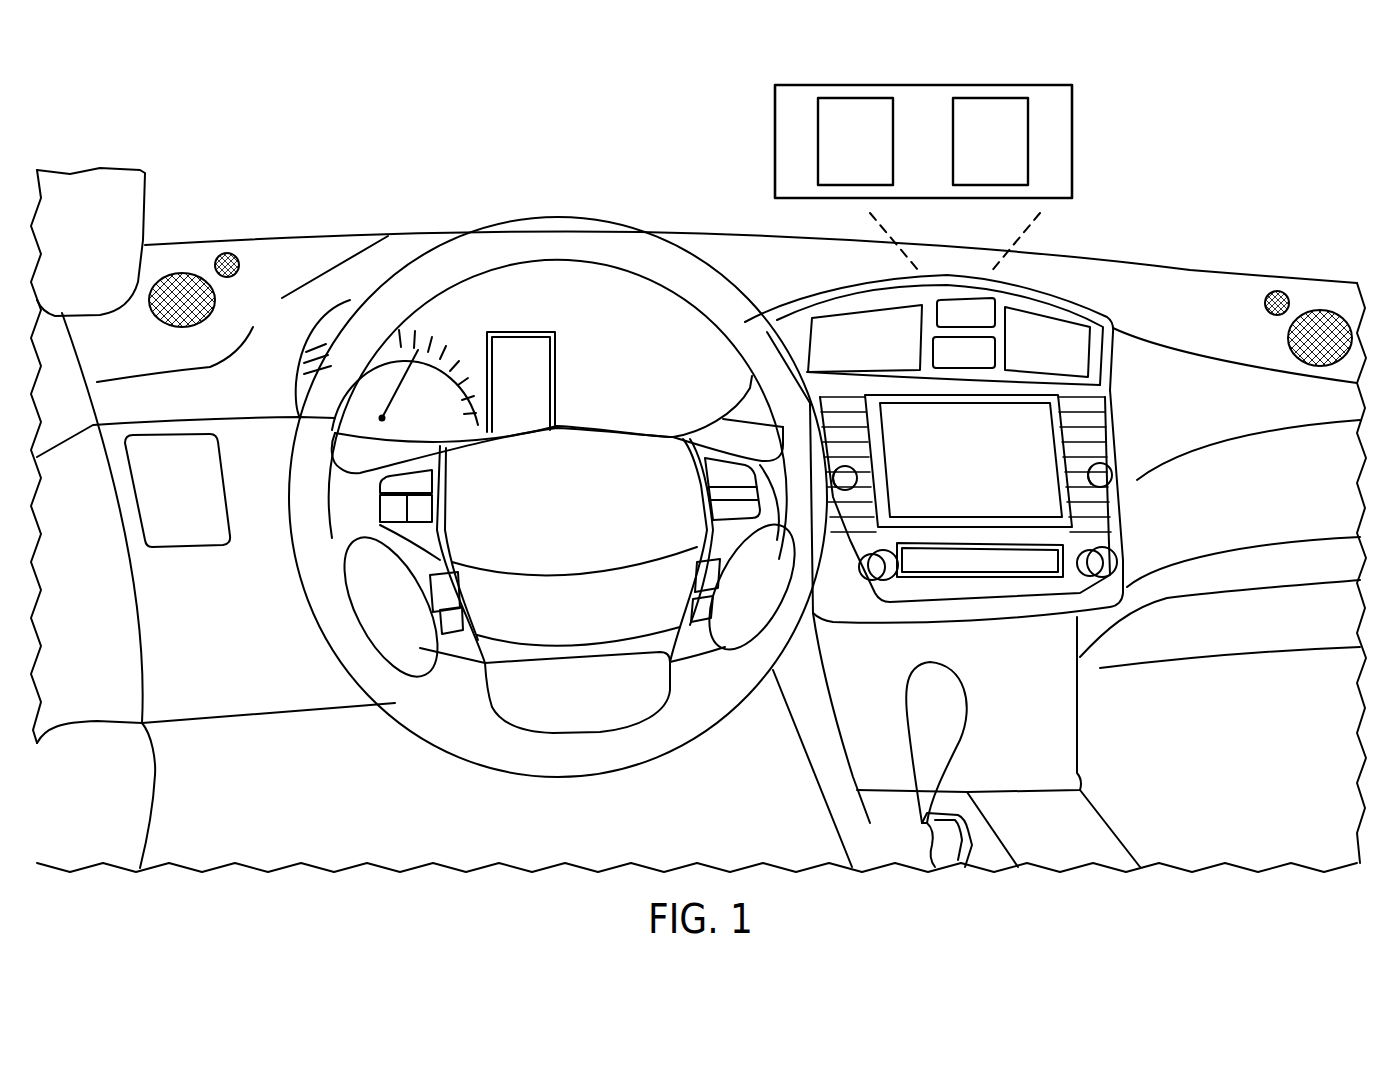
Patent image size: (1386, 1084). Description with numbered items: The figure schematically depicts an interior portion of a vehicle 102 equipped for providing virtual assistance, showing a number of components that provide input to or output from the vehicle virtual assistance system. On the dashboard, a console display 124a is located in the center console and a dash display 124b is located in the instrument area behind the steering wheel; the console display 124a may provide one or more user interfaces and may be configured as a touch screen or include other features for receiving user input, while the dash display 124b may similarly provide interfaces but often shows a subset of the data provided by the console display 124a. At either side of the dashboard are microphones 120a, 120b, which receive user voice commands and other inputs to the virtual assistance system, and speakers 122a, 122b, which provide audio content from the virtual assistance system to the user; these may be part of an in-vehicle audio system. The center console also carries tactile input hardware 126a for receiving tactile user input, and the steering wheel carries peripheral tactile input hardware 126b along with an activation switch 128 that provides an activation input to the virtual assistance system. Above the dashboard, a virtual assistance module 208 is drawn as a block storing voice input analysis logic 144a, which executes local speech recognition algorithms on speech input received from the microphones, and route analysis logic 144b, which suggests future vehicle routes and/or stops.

The vehicle 102 is at (273, 99).
The microphone 120a is at (227, 253).
The microphone 120b is at (1277, 291).
The speaker 122a is at (182, 273).
The speaker 122b is at (1320, 310).
The console display 124a is at (1040, 432).
The dash display 124b is at (537, 353).
The tactile input hardware 126a is at (857, 477).
The peripheral tactile input hardware 126b is at (420, 481).
The activation switch 128 is at (717, 473).
The voice input analysis logic 144a is at (883, 158).
The route analysis logic 144b is at (1018, 158).
The virtual assistance module 208 is at (1072, 103).